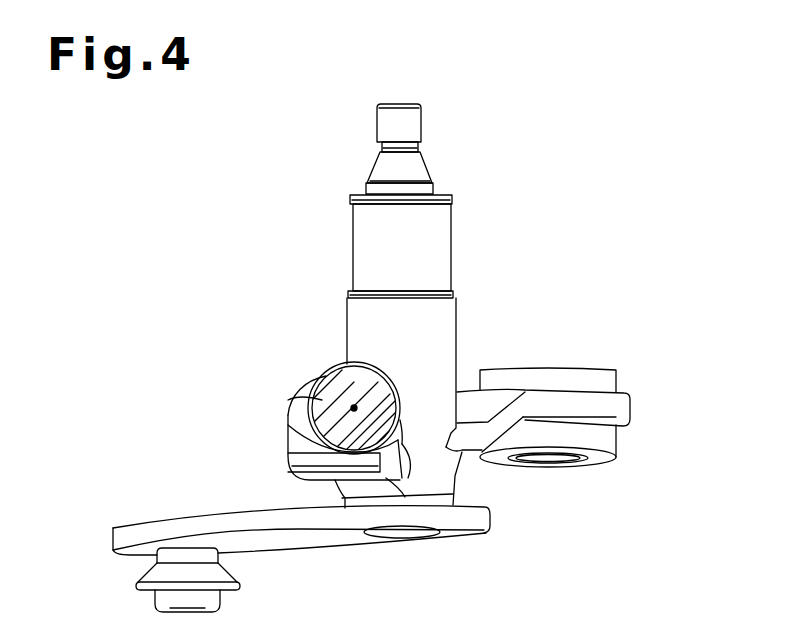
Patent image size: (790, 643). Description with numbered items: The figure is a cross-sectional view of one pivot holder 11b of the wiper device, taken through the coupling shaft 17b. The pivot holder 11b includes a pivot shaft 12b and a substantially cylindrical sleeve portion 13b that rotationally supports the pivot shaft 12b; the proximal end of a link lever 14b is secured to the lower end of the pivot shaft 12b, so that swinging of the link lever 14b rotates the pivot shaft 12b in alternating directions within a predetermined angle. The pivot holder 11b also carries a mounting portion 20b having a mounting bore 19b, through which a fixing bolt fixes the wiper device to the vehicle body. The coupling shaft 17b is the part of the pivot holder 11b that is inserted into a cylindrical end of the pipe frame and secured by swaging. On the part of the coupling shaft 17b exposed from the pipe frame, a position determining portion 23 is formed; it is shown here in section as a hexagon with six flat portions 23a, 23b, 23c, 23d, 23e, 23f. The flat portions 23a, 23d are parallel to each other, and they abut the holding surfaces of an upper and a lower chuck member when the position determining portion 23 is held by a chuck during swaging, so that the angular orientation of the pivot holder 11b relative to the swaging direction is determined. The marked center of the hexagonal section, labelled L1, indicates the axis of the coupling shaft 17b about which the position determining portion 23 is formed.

The pivot holder 11b is at (350, 214).
The pivot shaft 12b is at (421, 119).
The sleeve portion 13b is at (442, 246).
The link lever 14b is at (182, 530).
The coupling shaft 17b is at (389, 406).
The mounting bore 19b is at (578, 367).
The mounting portion 20b is at (622, 408).
The position determining portion 23 is at (362, 377).
The flat portion 23a is at (353, 364).
The flat portion 23b is at (390, 378).
The flat portion 23c is at (402, 423).
The flat portion 23d is at (303, 460).
The flat portion 23e is at (310, 433).
The flat portion 23f is at (326, 377).
The center axis L1 is at (354, 408).